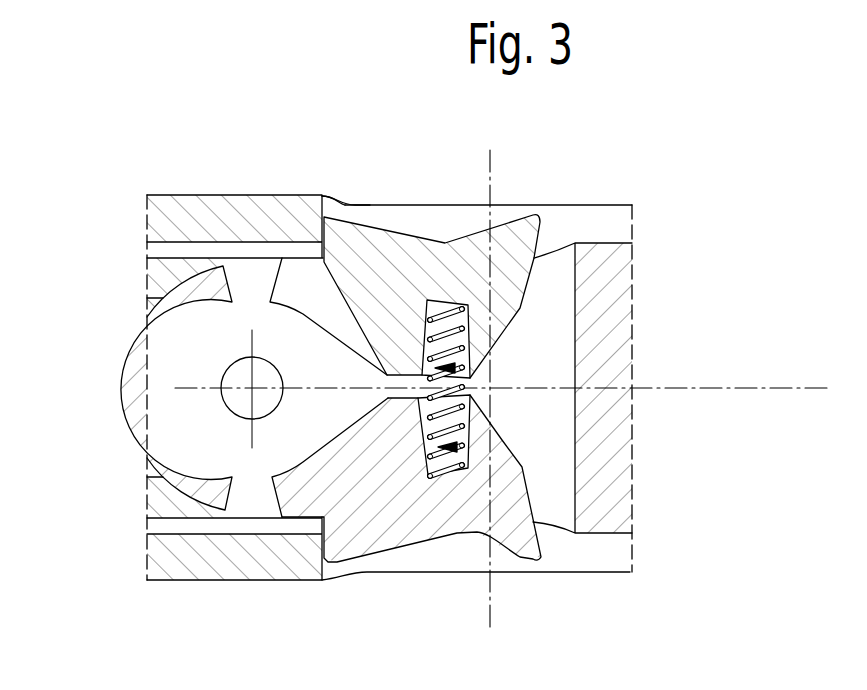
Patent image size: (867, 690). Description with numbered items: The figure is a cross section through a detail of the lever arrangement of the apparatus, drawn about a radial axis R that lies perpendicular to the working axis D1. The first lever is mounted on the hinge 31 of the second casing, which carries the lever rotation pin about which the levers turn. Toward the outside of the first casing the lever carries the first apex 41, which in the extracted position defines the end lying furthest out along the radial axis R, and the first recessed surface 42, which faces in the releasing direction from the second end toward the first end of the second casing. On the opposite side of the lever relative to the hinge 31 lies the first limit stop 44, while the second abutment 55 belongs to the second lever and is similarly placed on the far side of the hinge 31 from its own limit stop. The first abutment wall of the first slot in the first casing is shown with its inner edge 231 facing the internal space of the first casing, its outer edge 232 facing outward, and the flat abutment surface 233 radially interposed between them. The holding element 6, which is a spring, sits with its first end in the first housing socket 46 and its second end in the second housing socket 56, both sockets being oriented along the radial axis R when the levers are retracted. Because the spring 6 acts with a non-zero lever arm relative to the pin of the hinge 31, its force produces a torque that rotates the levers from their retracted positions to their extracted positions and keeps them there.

The second abutment 55 is at (223, 243).
The first limit stop 44 is at (225, 292).
The hinge 31 is at (224, 374).
The first apex 41 is at (537, 216).
The first recessed surface 42 is at (320, 228).
The inner edge 231 is at (320, 238).
The outer edge 232 is at (327, 196).
The abutment surface 233 is at (357, 205).
The holding element 6 is at (447, 330).
The first housing socket 46 is at (455, 369).
The second housing socket 56 is at (457, 447).
The radial axis R is at (490, 607).
The working axis D1 is at (768, 388).